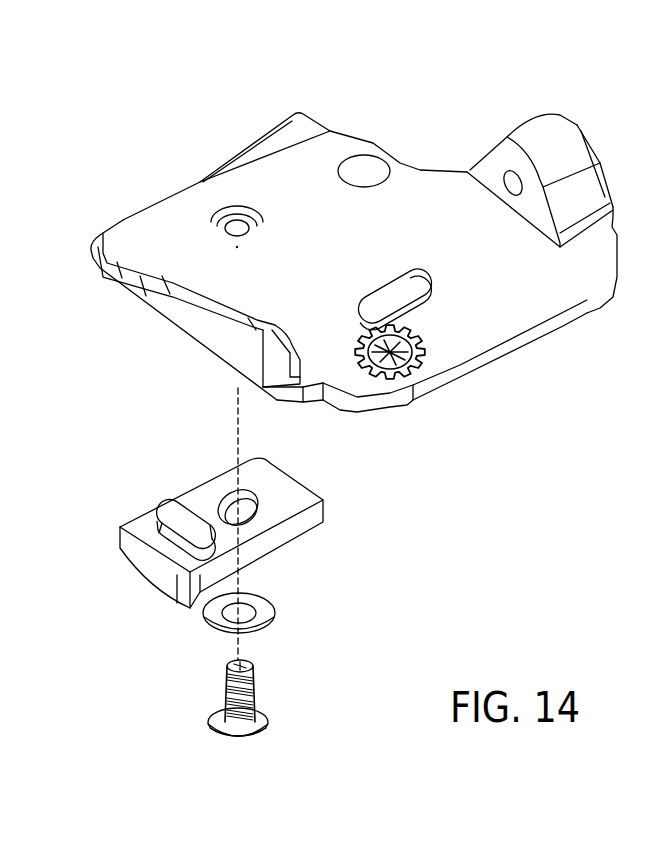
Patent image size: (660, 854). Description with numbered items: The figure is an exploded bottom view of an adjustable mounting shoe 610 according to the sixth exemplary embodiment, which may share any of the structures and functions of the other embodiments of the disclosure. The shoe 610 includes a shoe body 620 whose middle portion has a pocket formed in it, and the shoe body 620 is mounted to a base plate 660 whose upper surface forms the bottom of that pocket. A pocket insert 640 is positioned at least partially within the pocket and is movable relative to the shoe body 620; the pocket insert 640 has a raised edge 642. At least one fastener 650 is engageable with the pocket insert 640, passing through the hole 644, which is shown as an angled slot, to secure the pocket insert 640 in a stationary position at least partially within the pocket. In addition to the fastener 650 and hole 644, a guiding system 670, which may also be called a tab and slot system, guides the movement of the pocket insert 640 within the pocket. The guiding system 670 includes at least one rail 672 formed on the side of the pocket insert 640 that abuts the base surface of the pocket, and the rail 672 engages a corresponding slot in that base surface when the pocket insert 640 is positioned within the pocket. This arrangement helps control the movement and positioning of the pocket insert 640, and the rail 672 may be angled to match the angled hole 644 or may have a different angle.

The adjustable mounting shoe 610 is at (166, 90).
The shoe body 620 is at (302, 113).
The pocket insert 640 is at (303, 507).
The raised edge 642 is at (157, 587).
The hole 644 is at (257, 510).
The fastener 650 is at (262, 723).
The base plate 660 is at (407, 213).
The guiding system 670 is at (172, 400).
The rail 672 is at (185, 516).